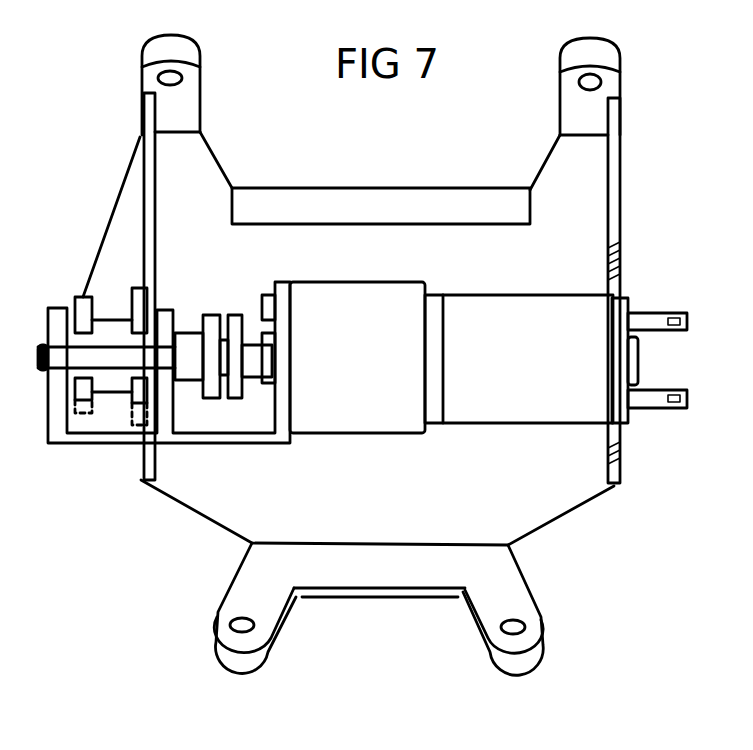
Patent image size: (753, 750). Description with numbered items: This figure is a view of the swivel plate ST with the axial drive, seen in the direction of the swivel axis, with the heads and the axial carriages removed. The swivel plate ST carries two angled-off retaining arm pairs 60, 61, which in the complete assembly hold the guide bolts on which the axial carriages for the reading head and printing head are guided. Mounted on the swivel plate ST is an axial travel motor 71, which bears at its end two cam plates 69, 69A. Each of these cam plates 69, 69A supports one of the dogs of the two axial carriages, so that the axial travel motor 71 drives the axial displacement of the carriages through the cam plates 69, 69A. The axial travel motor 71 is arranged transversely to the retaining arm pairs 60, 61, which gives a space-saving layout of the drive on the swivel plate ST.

The retaining arm pair 60 is at (220, 616).
The retaining arm pair 61 is at (148, 82).
The cam plate 69 is at (137, 290).
The cam plate 69A is at (81, 297).
The axial travel motor 71 is at (597, 315).
The swivel plate ST is at (583, 483).